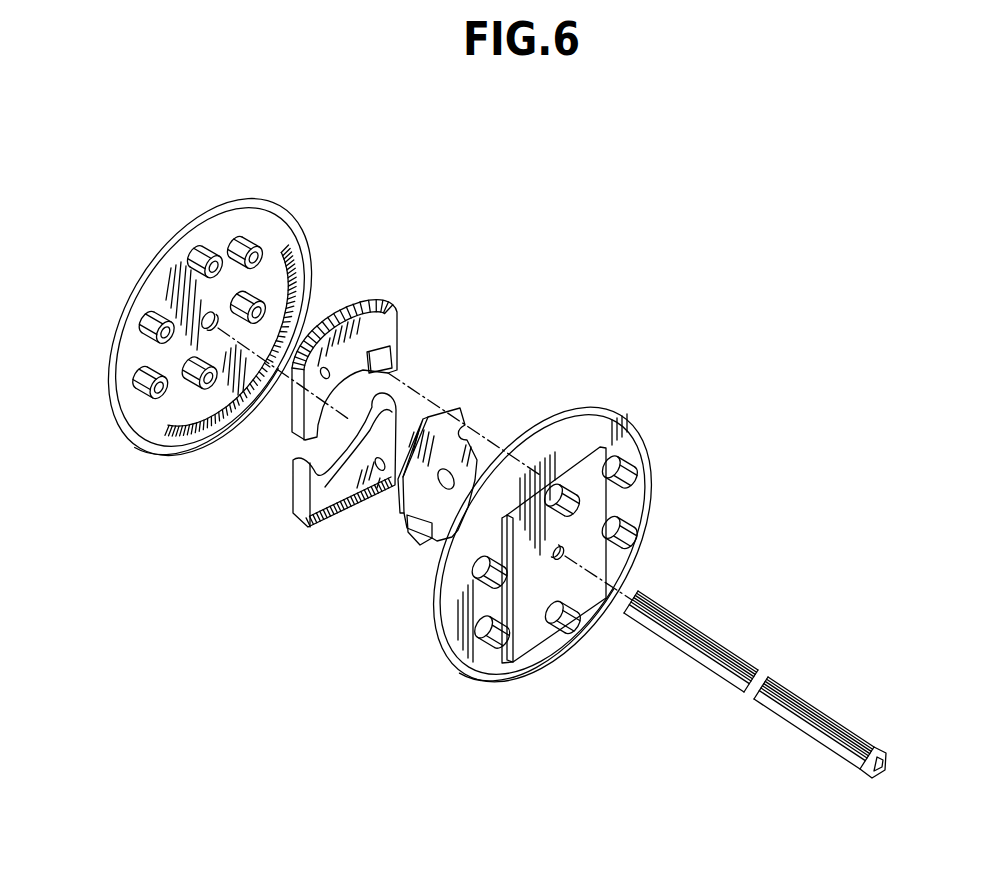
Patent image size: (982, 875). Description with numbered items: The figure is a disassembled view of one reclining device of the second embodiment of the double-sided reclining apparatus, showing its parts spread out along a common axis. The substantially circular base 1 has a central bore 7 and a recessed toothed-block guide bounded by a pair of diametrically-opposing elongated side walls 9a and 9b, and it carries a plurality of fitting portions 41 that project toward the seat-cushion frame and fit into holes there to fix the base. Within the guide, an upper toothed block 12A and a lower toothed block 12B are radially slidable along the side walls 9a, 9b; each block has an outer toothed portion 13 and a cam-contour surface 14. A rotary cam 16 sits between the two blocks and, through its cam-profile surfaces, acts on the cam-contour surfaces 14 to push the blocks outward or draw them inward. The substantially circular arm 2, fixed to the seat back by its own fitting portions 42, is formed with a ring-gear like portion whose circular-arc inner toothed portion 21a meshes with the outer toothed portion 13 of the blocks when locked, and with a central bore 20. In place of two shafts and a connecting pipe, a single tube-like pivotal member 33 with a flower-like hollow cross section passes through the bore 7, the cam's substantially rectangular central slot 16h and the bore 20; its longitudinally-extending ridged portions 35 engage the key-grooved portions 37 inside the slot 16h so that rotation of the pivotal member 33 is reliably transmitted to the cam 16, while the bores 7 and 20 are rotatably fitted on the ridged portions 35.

The base 1 is at (553, 571).
The arm 2 is at (202, 342).
The central bore 7 is at (558, 553).
The elongated side wall 9a is at (505, 607).
The elongated side wall 9b is at (607, 515).
The upper toothed block 12A is at (393, 327).
The lower toothed block 12B is at (367, 428).
The outer toothed portion 13 is at (345, 310).
The cam-contour surface 14 is at (300, 457).
The rotary cam 16 is at (433, 500).
The central slot 16h is at (441, 488).
The central bore 20 is at (210, 321).
The inner toothed portion 21a is at (245, 351).
The tube-like pivotal member 33 is at (755, 701).
The ridged portions 35 is at (755, 702).
The key-grooved portions 37 is at (432, 555).
The fitting portions 41 is at (555, 551).
The fitting portions 42 is at (212, 312).